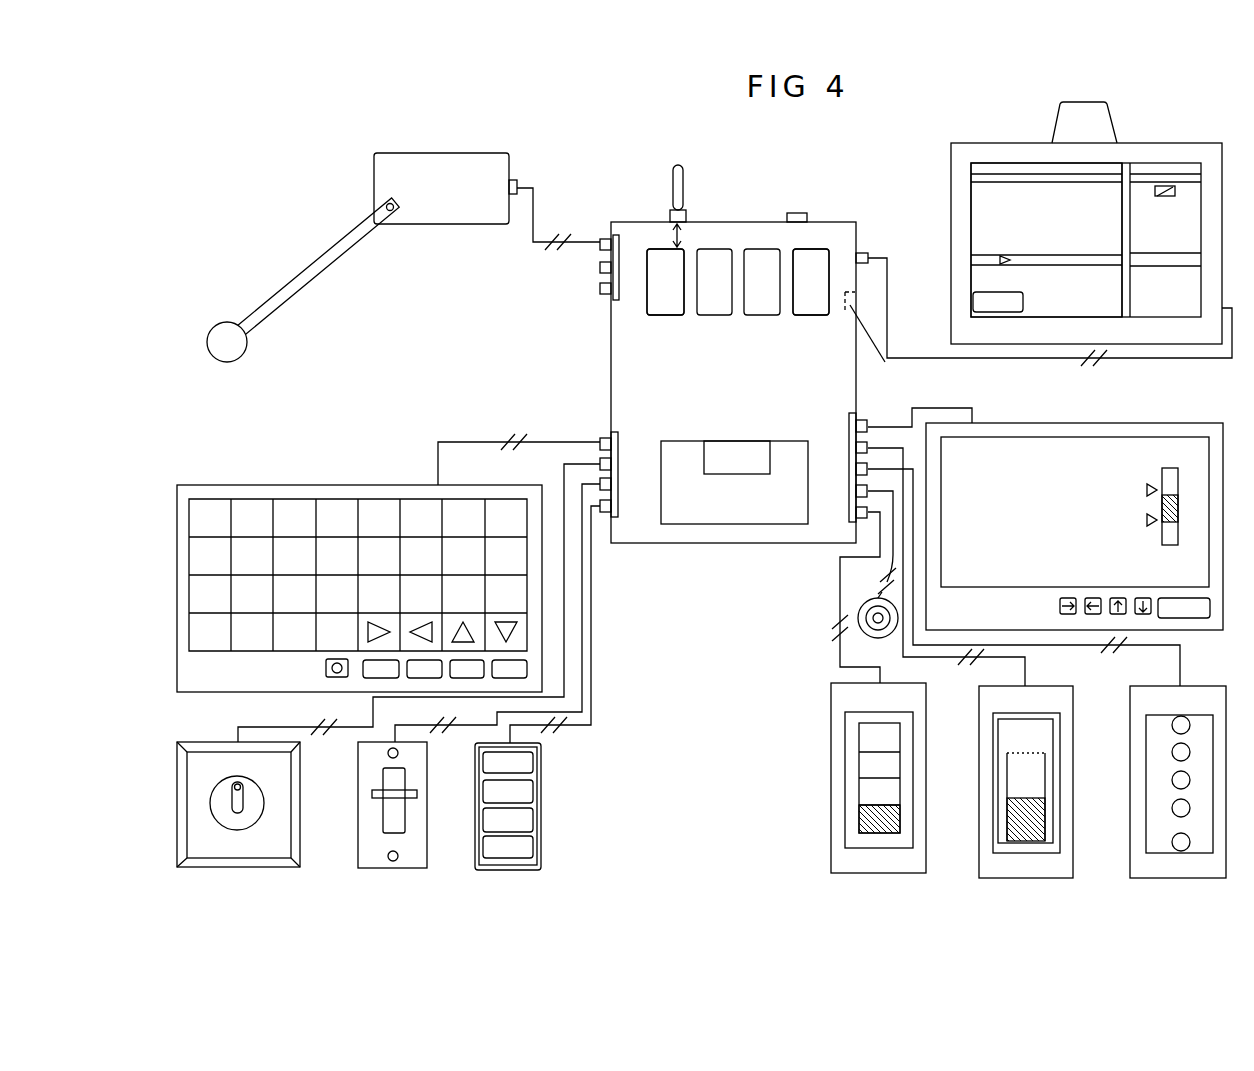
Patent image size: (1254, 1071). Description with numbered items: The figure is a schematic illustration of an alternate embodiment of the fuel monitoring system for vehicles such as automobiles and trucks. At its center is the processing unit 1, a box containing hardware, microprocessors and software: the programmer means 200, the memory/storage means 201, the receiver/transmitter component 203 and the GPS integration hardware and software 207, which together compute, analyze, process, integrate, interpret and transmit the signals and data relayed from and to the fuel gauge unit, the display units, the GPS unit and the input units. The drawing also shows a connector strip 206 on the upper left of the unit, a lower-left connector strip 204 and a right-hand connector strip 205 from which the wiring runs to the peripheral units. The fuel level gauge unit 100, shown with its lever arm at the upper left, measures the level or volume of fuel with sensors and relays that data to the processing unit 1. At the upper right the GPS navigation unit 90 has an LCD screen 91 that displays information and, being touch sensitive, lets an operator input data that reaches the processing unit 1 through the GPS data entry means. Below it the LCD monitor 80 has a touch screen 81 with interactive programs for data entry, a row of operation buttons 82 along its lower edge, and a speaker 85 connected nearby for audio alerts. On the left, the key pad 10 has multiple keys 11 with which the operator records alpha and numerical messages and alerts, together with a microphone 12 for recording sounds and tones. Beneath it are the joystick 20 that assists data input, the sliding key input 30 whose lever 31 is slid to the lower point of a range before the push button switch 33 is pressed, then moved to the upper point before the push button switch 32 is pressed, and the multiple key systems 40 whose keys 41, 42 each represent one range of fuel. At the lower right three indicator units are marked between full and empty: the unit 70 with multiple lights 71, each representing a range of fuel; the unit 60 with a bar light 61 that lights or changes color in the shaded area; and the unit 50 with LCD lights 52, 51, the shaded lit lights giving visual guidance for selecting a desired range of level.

The processing unit 1 is at (752, 388).
The key pad 10 is at (275, 483).
The keys 11 is at (350, 508).
The microphone 12 is at (327, 668).
The joystick 20 is at (302, 811).
The sliding key input 30 is at (428, 812).
The lever 31 is at (405, 792).
The push button switch 32 is at (400, 753).
The push button switch 33 is at (400, 855).
The multiple key systems 40 is at (541, 757).
The key 41 is at (523, 792).
The function button 42 is at (523, 845).
The input unit 50 is at (1130, 782).
The LCD lights 51 is at (1173, 810).
The LCD lights 52 is at (1170, 725).
The input unit 60 is at (979, 760).
The bar light 61 is at (1015, 820).
The input unit 70 is at (831, 752).
The lights 71 is at (862, 817).
The LCD monitor 80 is at (1125, 423).
The screen 81 is at (1035, 460).
The operation buttons 82 is at (1067, 613).
The speaker 85 is at (872, 628).
The GPS navigation unit 90 is at (951, 222).
The LCD screen 91 is at (1000, 280).
The fuel level gauge unit 100 is at (510, 163).
The programmer means 200 is at (765, 260).
The memory/storage means 201 is at (712, 470).
The receiver/transmitter component 203 is at (660, 295).
The input connector 204 is at (618, 500).
The output connector 205 is at (847, 503).
The lever connector 206 is at (620, 236).
The GPS integration hardware and software 207 is at (808, 265).